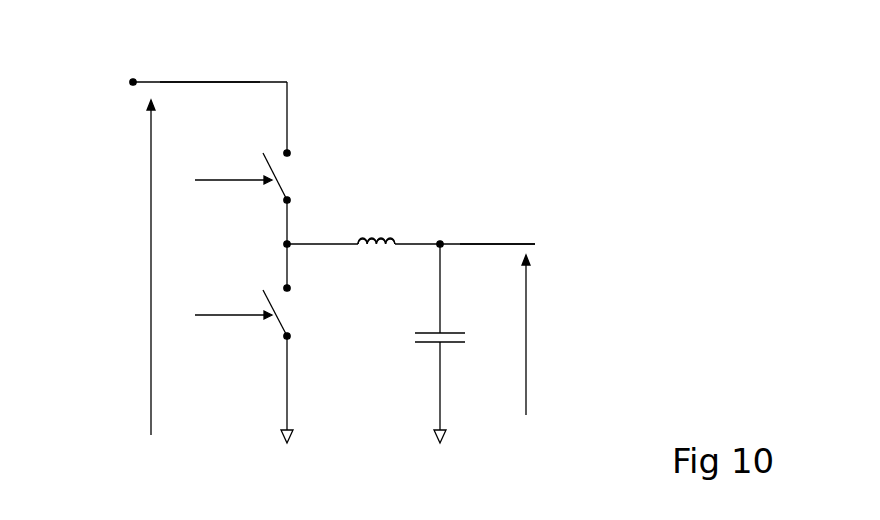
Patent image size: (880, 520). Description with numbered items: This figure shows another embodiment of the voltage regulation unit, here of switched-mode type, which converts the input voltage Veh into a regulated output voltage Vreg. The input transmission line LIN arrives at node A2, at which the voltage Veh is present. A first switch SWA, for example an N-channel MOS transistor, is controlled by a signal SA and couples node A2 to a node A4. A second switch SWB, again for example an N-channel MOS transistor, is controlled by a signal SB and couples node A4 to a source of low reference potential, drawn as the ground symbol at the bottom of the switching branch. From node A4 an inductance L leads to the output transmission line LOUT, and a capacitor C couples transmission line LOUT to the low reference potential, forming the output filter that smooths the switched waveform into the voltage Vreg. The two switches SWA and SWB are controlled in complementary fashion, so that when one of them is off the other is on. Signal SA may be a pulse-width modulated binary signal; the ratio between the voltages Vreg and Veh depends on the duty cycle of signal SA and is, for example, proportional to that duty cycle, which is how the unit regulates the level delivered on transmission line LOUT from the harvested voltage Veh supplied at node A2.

The node A2 is at (130, 82).
The transmission line LIN is at (216, 81).
The signal SA is at (228, 167).
The first switch SWA is at (292, 183).
The node A4 is at (285, 244).
The signal SB is at (228, 302).
The second switch SWB is at (292, 318).
The inductance L is at (374, 242).
The transmission line LOUT is at (513, 243).
The capacitor C is at (429, 345).
The voltage Veh is at (150, 226).
The voltage Vreg is at (527, 330).